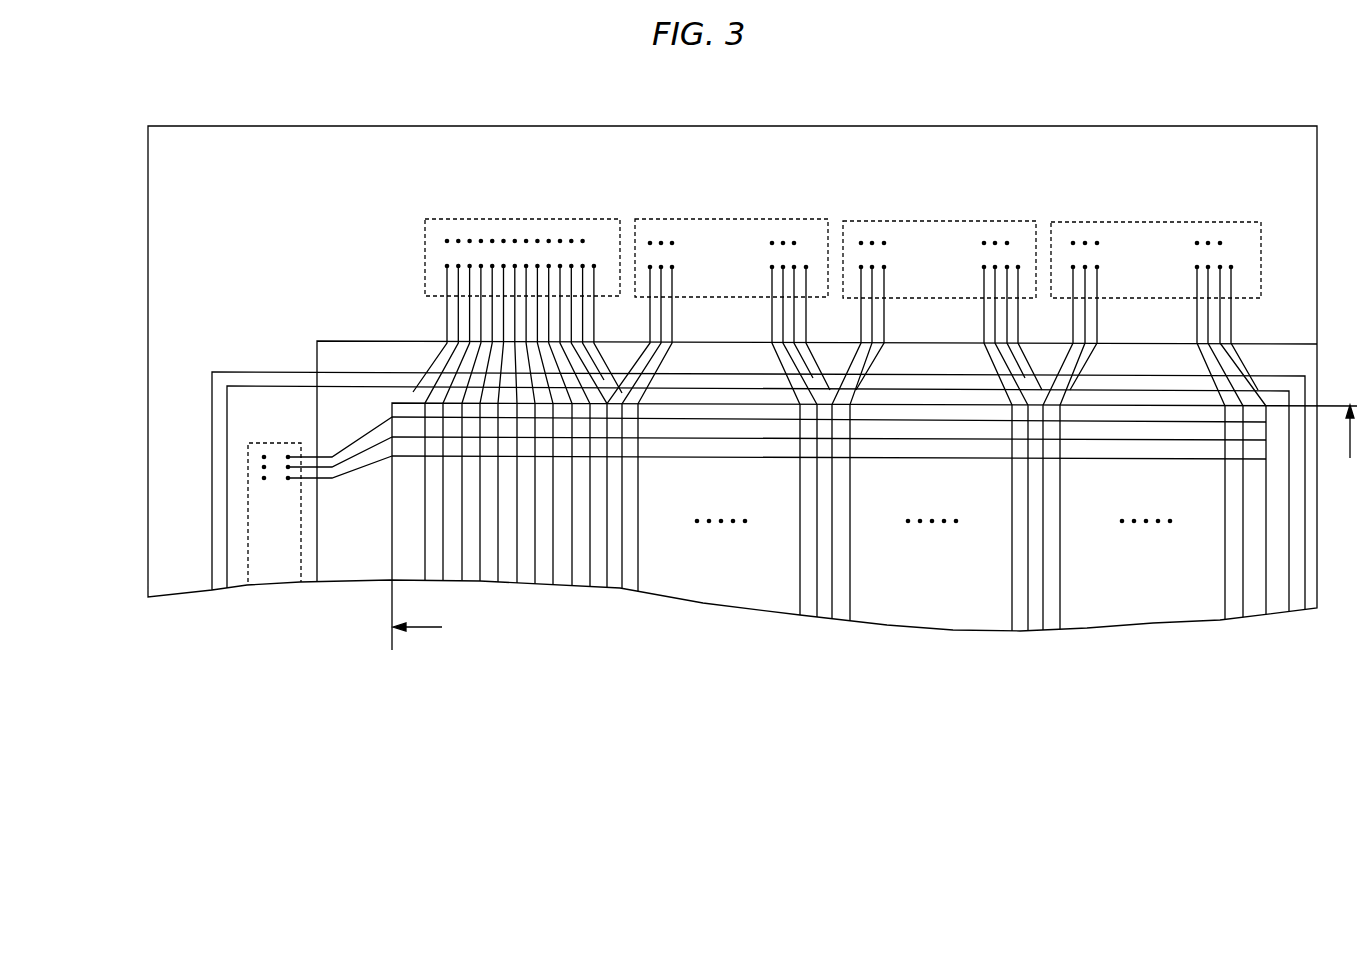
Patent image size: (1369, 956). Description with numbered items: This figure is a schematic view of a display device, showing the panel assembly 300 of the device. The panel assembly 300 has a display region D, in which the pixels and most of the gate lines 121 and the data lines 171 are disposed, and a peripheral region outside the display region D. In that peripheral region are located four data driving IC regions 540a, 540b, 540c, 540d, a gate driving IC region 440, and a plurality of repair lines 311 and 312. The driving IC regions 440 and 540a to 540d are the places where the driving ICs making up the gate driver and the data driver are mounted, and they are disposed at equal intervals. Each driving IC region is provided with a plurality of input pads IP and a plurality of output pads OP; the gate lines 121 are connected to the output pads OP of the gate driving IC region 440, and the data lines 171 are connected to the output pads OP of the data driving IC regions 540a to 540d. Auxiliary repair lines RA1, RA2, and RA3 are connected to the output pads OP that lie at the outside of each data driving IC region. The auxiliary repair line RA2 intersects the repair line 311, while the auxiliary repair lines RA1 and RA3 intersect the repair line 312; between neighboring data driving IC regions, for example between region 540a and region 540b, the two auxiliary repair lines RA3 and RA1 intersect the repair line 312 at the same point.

The panel assembly 300 is at (221, 111).
The repair line 311 is at (212, 463).
The repair line 312 is at (227, 498).
The gate driving IC region 440 is at (247, 567).
The data driving IC region 540a is at (490, 219).
The data driving IC region 540b is at (730, 219).
The data driving IC region 540c is at (938, 221).
The data driving IC region 540d is at (1156, 222).
The data lines 171 is at (638, 495).
The gate lines 121 is at (743, 459).
The input pads IP is at (445, 242).
The output pads OP is at (445, 267).
The auxiliary repair line RA1 is at (443, 288).
The auxiliary repair line RA2 is at (590, 280).
The auxiliary repair line RA3 is at (601, 285).
The display region D is at (875, 523).